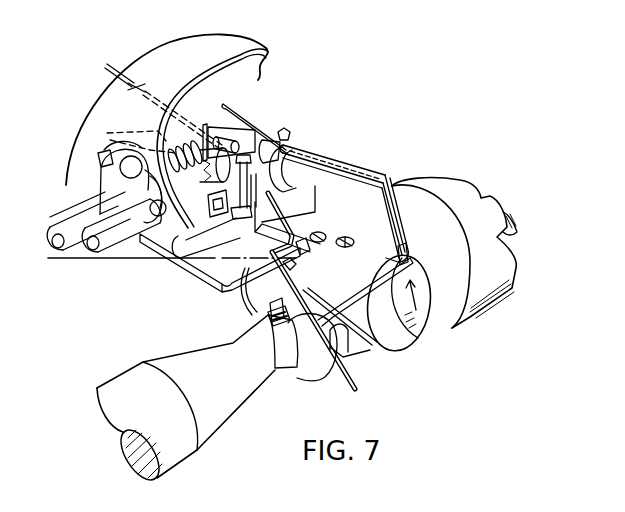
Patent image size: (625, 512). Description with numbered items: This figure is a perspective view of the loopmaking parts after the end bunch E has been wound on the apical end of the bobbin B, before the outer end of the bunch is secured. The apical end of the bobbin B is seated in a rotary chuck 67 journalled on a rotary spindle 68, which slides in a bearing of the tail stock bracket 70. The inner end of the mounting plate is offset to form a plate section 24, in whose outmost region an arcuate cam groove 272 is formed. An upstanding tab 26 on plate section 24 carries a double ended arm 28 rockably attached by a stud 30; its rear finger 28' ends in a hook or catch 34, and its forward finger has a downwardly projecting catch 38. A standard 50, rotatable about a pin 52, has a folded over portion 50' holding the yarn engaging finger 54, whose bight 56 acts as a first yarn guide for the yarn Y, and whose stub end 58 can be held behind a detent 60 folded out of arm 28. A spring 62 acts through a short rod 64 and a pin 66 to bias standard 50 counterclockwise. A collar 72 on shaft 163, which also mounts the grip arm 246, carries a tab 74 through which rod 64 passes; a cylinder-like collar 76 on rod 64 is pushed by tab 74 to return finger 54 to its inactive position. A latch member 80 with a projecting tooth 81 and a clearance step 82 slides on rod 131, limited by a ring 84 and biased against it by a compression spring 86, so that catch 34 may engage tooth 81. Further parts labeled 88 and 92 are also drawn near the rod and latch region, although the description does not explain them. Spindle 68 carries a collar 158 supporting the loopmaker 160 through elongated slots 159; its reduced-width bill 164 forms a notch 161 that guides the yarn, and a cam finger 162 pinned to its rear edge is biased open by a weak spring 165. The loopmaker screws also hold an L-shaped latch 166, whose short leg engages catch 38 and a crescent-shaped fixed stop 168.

The plate section 24 is at (285, 213).
The upstanding tab 26 is at (327, 160).
The double ended arm 28 is at (323, 138).
The rear finger 28' is at (250, 120).
The stud 30 is at (303, 140).
The hook or catch 34 is at (110, 137).
The catch 38 is at (405, 243).
The standard 50 is at (258, 181).
The folded over portion 50' is at (234, 231).
The pin 52 is at (246, 221).
The yarn engaging finger 54 is at (356, 382).
The bight 56 is at (295, 266).
The stub end 58 is at (257, 193).
The detent 60 is at (360, 163).
The spring 62 is at (107, 68).
The short rod 64 is at (195, 118).
The pin 66 is at (303, 126).
The rotary chuck 67 is at (350, 340).
The rotary spindle 68 is at (437, 287).
The tail stock bracket 70 is at (487, 283).
The collar 72 is at (285, 127).
The tab 74 is at (245, 123).
The cylinder-like collar 76 is at (277, 117).
The latch member 80 is at (120, 167).
The projecting tooth 81 is at (117, 147).
The clearance step 82 is at (105, 157).
The ring 84 is at (130, 180).
The compression spring 86 is at (167, 127).
The tubes 88 is at (52, 224).
The fitting 92 is at (214, 212).
The rod 131 is at (70, 237).
The collar 158 is at (418, 347).
The elongated slots 159 is at (350, 239).
The loopmaker 160 is at (397, 337).
The notch 161 is at (293, 297).
The cam finger 162 is at (237, 297).
The shaft 163 is at (105, 250).
The tongue or bill 164 is at (270, 313).
The spring 165 is at (310, 248).
The L-shaped latch 166 is at (392, 264).
The fixed stop 168 is at (377, 170).
The grip arm 246 is at (163, 53).
The cam groove 272 is at (192, 268).
The bobbin B is at (267, 360).
The end bunch E is at (267, 320).
The yarn Y is at (138, 258).